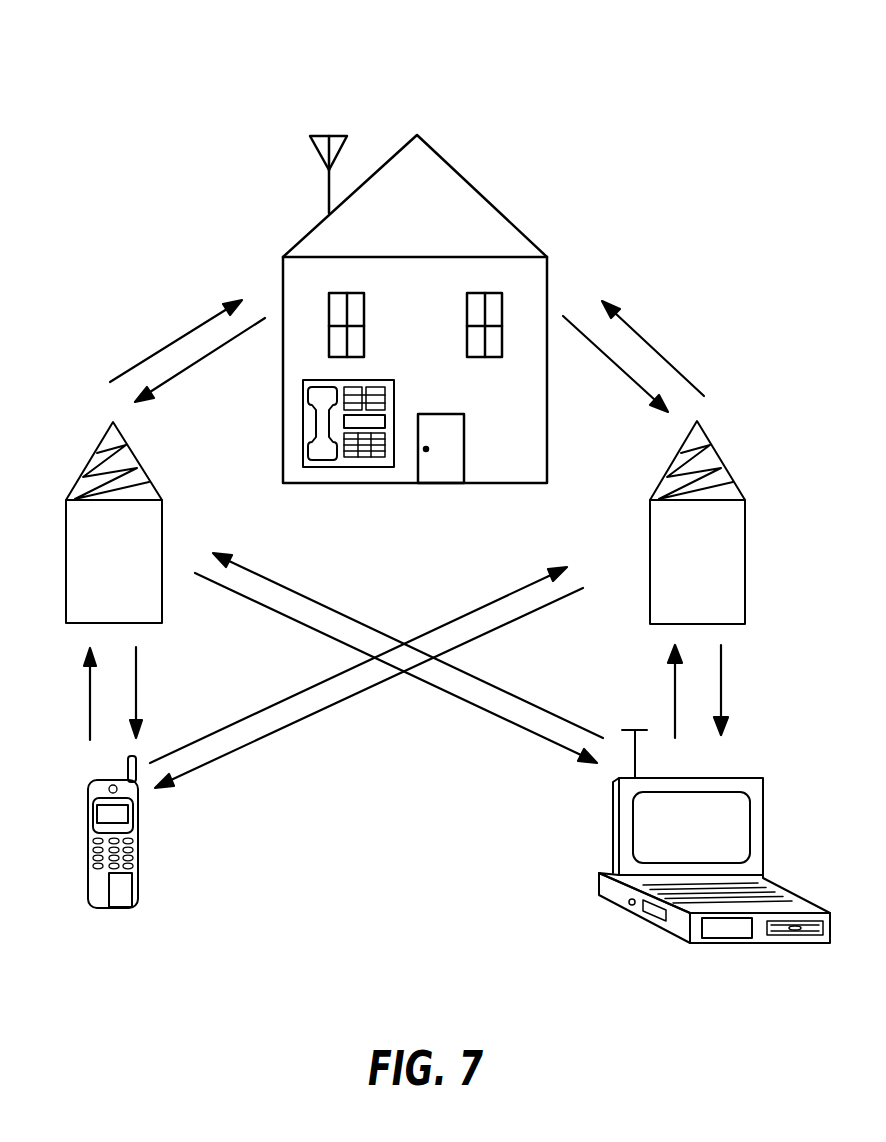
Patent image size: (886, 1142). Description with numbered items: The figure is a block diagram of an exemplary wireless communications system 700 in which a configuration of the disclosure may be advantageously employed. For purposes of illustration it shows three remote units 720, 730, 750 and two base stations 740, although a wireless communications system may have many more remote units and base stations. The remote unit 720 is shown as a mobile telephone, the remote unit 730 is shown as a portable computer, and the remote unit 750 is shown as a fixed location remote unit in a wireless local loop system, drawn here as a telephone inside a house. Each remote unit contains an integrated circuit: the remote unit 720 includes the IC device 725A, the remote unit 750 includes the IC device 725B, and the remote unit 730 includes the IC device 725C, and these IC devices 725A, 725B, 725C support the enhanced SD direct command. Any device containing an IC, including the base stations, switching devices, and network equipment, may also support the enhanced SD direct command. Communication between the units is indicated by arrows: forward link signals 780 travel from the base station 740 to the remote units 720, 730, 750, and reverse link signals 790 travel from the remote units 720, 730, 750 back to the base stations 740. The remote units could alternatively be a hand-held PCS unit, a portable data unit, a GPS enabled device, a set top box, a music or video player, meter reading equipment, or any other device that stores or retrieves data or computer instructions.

The wireless communications system 700 is at (102, 44).
The remote unit 720 is at (92, 787).
The IC device 725A is at (122, 895).
The IC device 725B is at (373, 422).
The IC device 725C is at (733, 930).
The remote unit 730 is at (743, 777).
The base station 740 is at (92, 462).
The remote unit 750 is at (303, 434).
The forward link signals 780 is at (180, 335).
The reverse link signals 790 is at (187, 372).